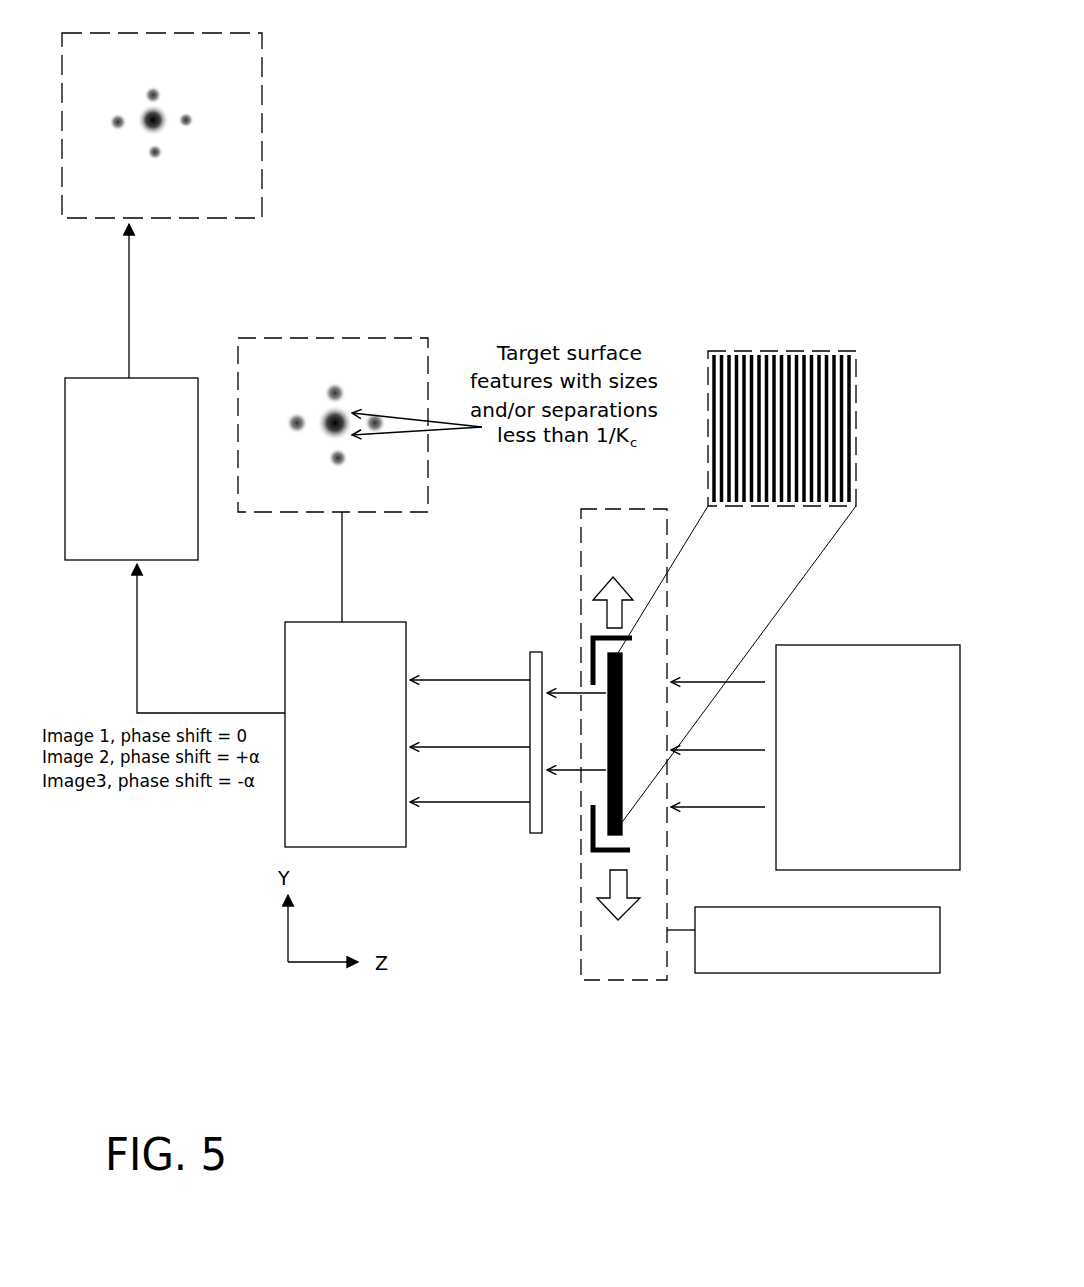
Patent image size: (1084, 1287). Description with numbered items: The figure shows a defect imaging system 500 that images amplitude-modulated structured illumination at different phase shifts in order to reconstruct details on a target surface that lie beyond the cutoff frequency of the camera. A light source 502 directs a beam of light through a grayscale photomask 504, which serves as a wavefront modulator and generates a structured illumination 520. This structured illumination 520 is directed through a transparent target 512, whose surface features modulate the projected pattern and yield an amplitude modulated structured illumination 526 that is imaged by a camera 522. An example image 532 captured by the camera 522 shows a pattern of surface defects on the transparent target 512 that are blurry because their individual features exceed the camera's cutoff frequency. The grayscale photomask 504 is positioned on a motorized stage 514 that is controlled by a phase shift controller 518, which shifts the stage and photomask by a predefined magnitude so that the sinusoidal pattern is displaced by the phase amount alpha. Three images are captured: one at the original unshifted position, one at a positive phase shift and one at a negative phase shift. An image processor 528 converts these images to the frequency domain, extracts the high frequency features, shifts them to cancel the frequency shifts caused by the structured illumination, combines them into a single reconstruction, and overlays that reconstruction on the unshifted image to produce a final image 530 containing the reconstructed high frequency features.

The defect imaging system 500 is at (756, 54).
The light source 502 is at (887, 784).
The grayscale photomask 504 is at (830, 351).
The transparent target 512 is at (530, 667).
The motorized stage 514 is at (630, 850).
The phase shift controller 518 is at (837, 966).
The structured illumination 520 is at (593, 739).
The camera 522 is at (365, 759).
The amplitude modulated structured illumination 526 is at (477, 727).
The image processor 528 is at (150, 507).
The final image 530 is at (262, 133).
The example image 532 is at (325, 338).